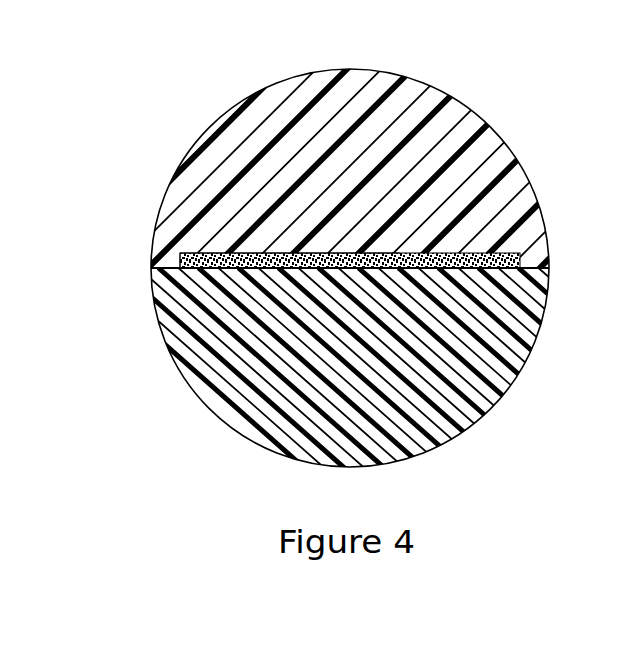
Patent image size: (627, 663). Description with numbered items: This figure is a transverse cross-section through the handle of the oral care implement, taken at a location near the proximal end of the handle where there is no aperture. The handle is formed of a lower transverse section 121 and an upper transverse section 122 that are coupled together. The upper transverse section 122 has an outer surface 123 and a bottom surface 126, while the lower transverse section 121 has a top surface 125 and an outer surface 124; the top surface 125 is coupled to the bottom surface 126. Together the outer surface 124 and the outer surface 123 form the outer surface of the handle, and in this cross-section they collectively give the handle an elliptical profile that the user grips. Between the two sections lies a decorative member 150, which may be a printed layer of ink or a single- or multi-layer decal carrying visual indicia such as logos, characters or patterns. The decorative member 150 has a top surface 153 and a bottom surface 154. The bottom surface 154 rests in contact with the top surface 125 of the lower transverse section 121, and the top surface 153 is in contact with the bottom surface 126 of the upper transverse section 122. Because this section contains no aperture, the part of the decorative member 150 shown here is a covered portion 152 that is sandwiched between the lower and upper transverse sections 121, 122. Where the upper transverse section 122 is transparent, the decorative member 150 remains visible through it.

The lower transverse section 121 is at (430, 405).
The upper transverse section 122 is at (413, 128).
The outer surface 123 is at (230, 108).
The outer surface 124 is at (210, 412).
The top surface 125 is at (150, 254).
The bottom surface 126 is at (548, 286).
The decorative member 150 is at (480, 252).
The covered portion 152 is at (205, 257).
The top surface 153 is at (327, 256).
The bottom surface 154 is at (277, 268).